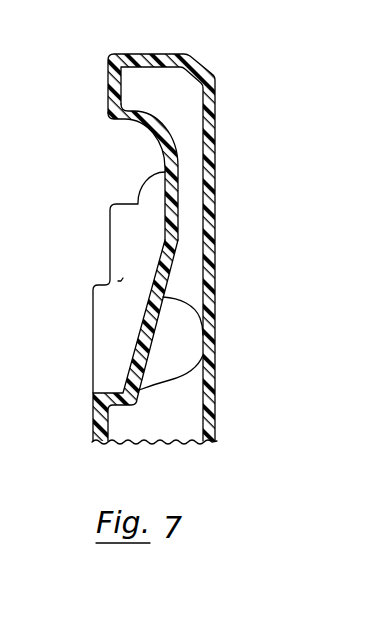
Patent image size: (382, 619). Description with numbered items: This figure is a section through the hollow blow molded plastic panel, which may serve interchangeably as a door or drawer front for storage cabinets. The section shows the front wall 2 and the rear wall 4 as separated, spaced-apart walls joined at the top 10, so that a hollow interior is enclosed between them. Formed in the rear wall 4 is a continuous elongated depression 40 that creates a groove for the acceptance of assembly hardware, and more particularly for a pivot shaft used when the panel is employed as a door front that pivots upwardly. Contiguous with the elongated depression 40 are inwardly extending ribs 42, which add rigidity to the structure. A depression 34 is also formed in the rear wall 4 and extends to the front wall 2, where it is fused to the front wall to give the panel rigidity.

The top 10 is at (152, 54).
The front wall 2 is at (214, 202).
The rear wall 4 is at (93, 420).
The elongated depression 40 is at (131, 121).
The ribs 42 is at (159, 262).
The depressions 34 is at (179, 373).